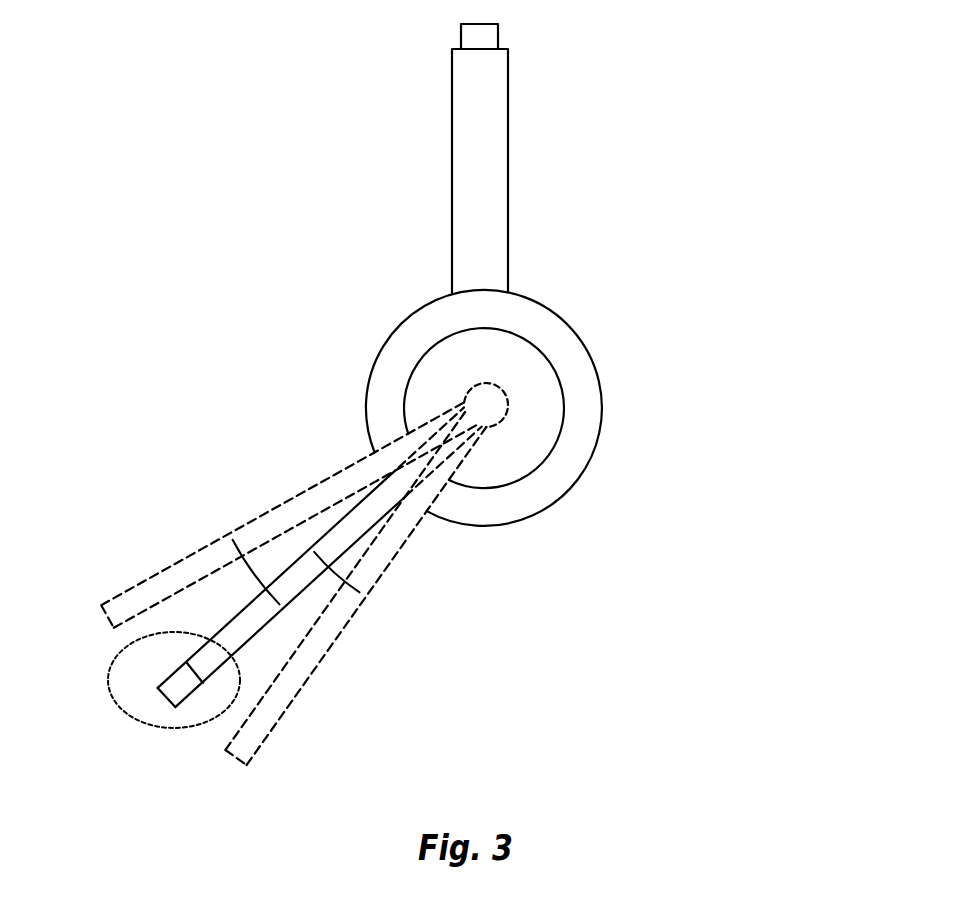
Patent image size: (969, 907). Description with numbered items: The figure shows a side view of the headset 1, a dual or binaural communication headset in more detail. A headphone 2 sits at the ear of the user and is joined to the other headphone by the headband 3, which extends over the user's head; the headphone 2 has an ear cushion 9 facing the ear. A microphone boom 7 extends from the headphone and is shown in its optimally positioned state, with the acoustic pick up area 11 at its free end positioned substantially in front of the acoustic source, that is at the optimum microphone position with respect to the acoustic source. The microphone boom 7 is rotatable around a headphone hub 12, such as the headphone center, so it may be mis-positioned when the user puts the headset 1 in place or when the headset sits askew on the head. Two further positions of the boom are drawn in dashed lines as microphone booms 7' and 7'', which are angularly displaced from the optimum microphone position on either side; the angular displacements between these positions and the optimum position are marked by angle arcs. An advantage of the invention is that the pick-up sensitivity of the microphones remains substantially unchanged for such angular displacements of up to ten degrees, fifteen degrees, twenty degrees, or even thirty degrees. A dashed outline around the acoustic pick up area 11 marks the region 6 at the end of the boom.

The headset 1 is at (172, 210).
The headphone 2 is at (532, 408).
The headband 3 is at (477, 163).
The detection region 6 is at (138, 715).
The microphone boom 7 is at (320, 646).
The microphone boom 7' is at (392, 588).
The microphone boom 7'' is at (289, 492).
The ear cushion 9 is at (543, 333).
The acoustic pick up area 11 is at (165, 677).
The headphone hub 12 is at (503, 420).